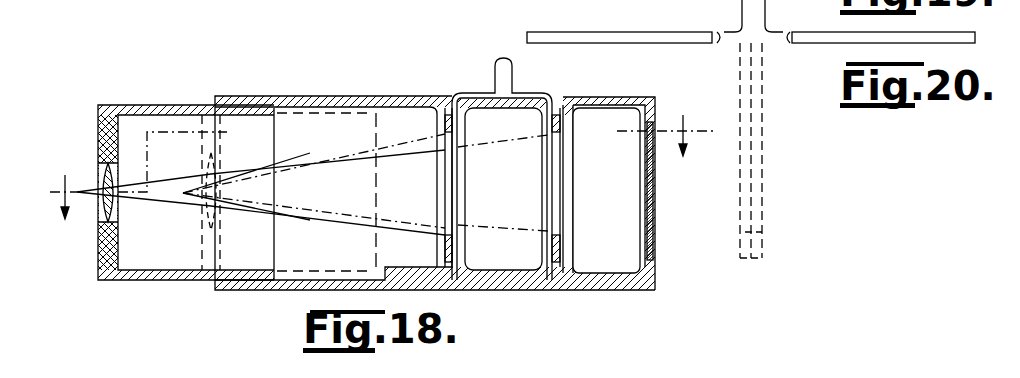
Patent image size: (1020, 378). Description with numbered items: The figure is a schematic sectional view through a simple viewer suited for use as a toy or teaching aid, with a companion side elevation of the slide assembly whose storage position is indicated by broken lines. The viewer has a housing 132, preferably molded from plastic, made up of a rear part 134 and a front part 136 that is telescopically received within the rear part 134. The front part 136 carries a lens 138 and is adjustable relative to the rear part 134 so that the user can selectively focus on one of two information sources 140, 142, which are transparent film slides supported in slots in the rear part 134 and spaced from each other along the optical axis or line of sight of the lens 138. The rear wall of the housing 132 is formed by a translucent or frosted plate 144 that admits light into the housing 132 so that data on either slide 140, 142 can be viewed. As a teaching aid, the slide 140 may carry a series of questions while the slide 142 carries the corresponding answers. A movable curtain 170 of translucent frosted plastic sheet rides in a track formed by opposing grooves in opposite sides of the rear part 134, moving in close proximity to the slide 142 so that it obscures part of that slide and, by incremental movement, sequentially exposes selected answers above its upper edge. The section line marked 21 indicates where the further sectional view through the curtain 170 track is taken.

In FIG. 18, the housing 132 is at (303, 97).
In FIG. 18, the rear part 134 is at (361, 96).
In FIG. 18, the front part 136 is at (138, 105).
In FIG. 18, the lens 138 is at (100, 213).
In FIG. 18, the information source 140 is at (445, 179).
In FIG. 20, the information source 140 is at (645, 32).
In FIG. 18, the information source 142 is at (562, 168).
In FIG. 20, the information source 142 is at (831, 32).
In FIG. 18, the translucent plate 144 is at (650, 195).
In FIG. 18, the movable curtain 170 is at (547, 182).
In FIG. 18, the section line 21 is at (383, 153).